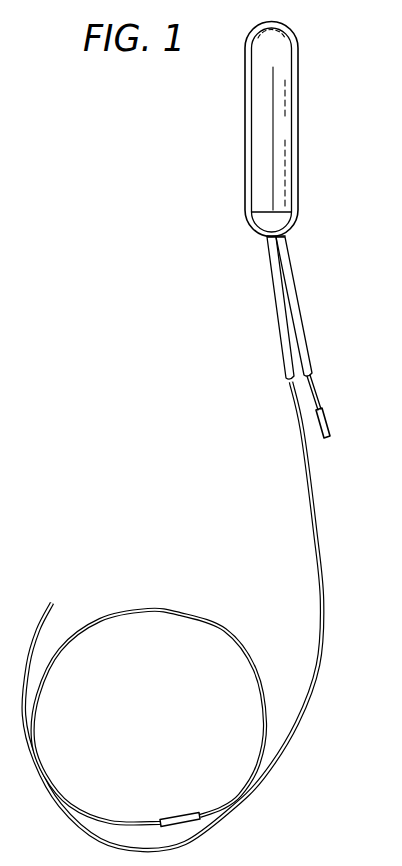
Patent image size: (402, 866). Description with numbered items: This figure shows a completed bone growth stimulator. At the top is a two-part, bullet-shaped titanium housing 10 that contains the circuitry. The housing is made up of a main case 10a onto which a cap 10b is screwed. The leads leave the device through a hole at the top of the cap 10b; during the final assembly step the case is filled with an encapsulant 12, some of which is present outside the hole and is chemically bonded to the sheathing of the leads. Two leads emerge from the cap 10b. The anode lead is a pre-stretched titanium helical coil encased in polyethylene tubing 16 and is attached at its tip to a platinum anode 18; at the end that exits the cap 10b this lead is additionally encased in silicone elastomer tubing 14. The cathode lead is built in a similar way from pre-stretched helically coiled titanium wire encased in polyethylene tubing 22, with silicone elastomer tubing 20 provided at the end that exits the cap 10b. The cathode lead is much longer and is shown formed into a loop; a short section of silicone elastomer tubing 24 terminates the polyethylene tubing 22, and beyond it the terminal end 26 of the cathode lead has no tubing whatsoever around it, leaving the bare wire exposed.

The housing 10 is at (312, 130).
The main case 10a is at (250, 130).
The cap 10b is at (249, 228).
The encapsulant 12 is at (284, 232).
The silicone elastomer tubing 14 is at (299, 316).
The polyethylene tubing 16 is at (315, 392).
The platinum anode 18 is at (333, 438).
The silicone elastomer tubing 20 is at (278, 324).
The polyethylene tubing 22 is at (303, 458).
The silicone elastomer tubing 24 is at (185, 816).
The terminal end 26 is at (143, 615).